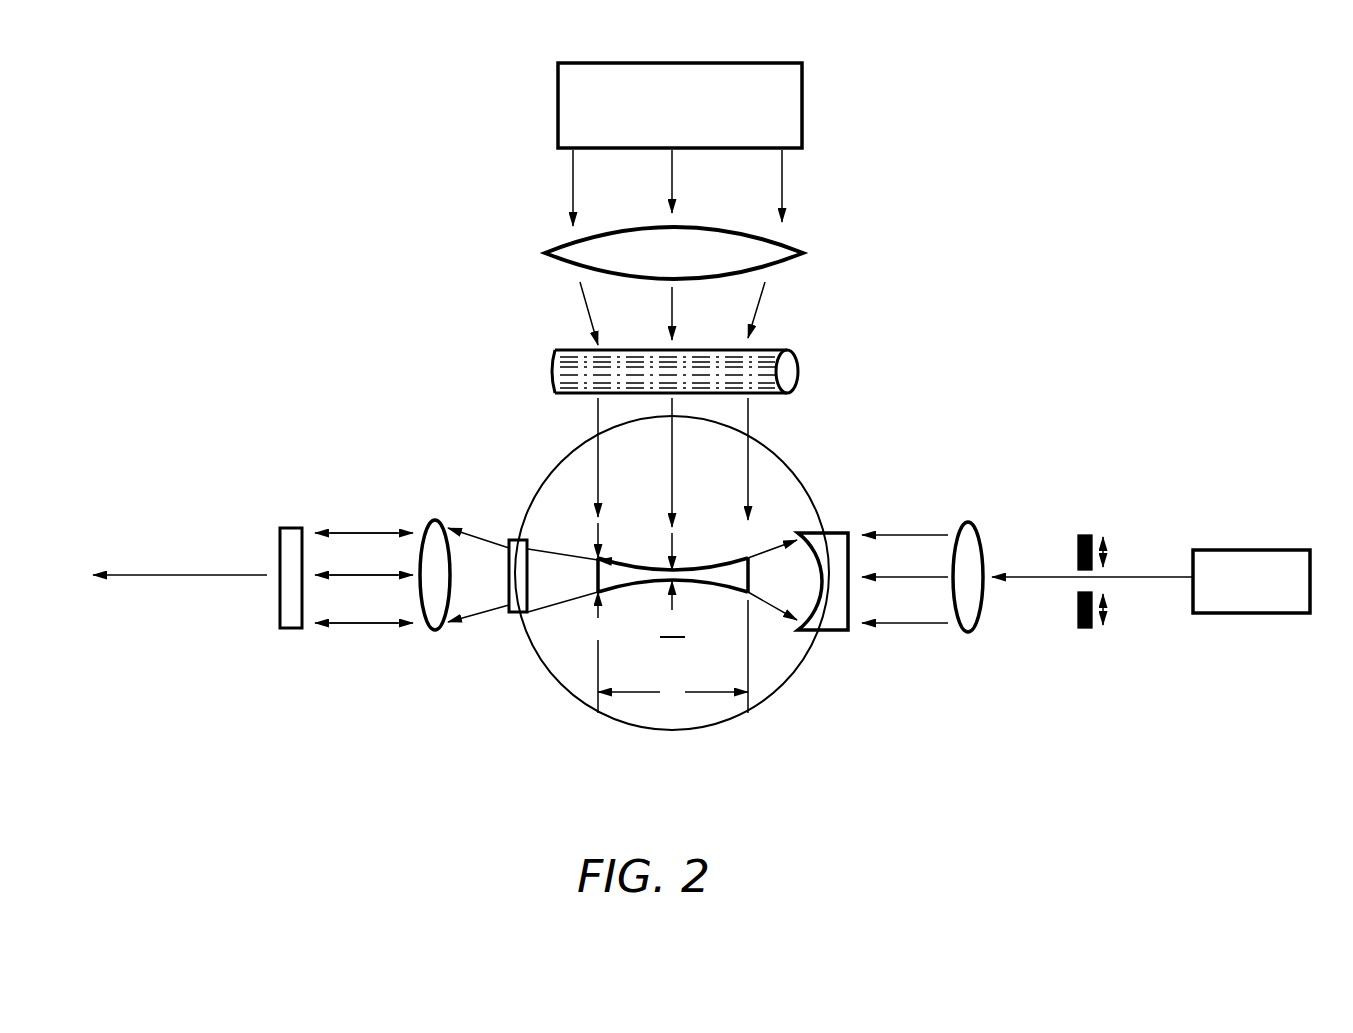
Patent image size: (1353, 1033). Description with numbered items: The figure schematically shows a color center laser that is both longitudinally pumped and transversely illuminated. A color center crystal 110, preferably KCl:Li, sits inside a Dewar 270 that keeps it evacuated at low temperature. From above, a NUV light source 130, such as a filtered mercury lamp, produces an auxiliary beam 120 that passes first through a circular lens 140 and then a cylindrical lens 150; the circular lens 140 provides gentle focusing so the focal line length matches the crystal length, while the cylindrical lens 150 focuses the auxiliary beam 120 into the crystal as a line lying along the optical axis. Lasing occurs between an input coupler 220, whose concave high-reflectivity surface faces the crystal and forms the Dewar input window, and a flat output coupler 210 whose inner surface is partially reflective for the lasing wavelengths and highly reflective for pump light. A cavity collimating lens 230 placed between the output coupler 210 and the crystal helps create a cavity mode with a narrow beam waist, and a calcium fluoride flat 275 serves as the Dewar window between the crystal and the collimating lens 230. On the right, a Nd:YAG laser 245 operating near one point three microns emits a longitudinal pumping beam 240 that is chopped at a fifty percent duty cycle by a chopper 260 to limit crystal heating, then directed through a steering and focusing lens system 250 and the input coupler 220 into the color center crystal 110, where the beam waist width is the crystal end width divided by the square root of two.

The color center crystal 110 is at (597, 557).
The auxiliary beam 120 is at (782, 190).
The NUV light source 130 is at (757, 62).
The circular lens 140 is at (803, 253).
The cylindrical lens 150 is at (798, 372).
The output coupler 210 is at (283, 628).
The input coupler 220 is at (838, 632).
The cavity collimating lens 230 is at (432, 630).
The longitudinal pumping beam 240 is at (1165, 580).
The Nd:YAG laser 245 is at (1252, 550).
The steering and focusing lens system 250 is at (966, 524).
The chopper 260 is at (1082, 535).
The Dewar 270 is at (667, 732).
The calcium fluoride flat 275 is at (513, 613).